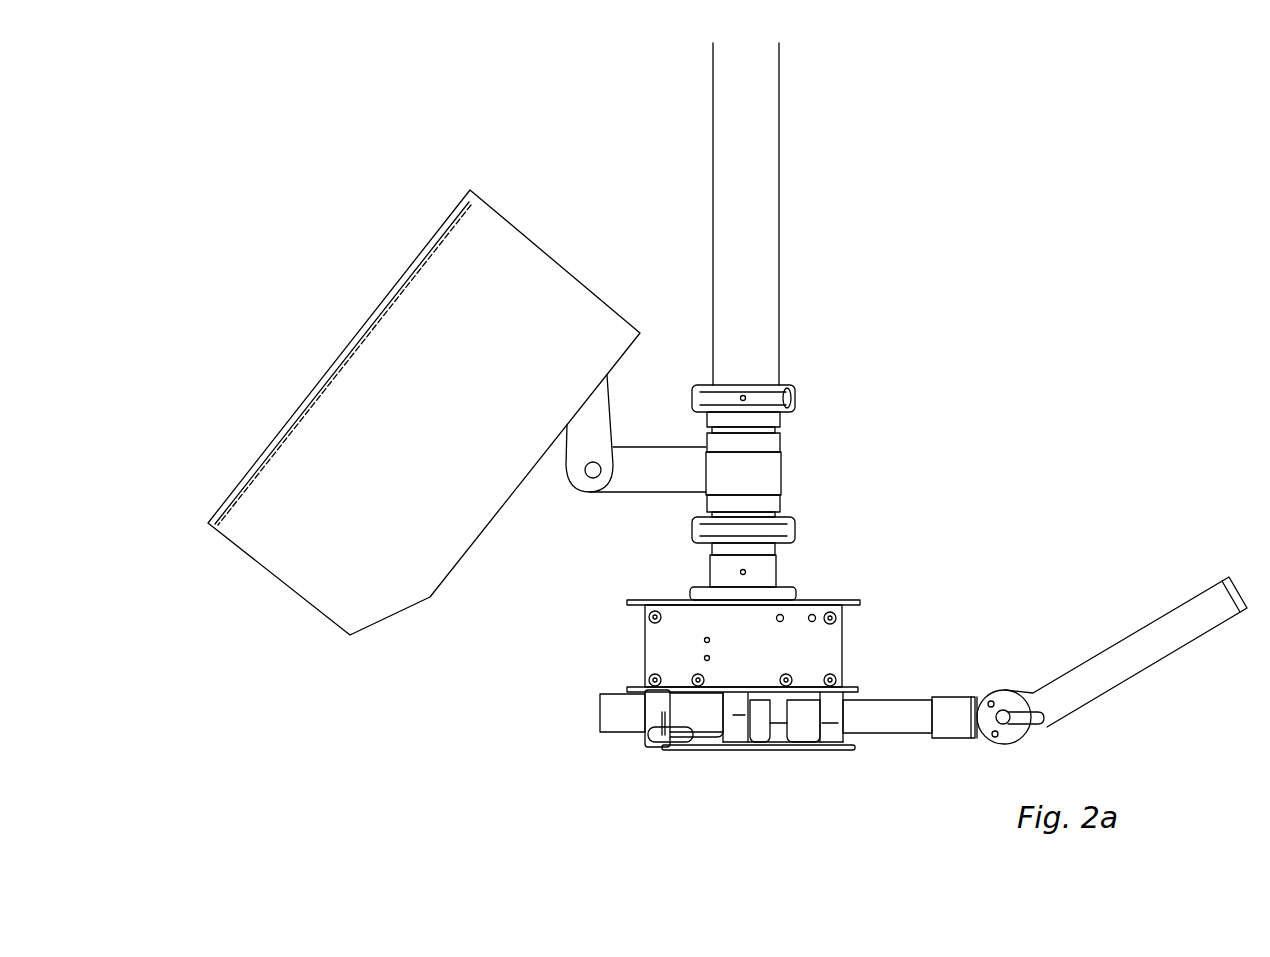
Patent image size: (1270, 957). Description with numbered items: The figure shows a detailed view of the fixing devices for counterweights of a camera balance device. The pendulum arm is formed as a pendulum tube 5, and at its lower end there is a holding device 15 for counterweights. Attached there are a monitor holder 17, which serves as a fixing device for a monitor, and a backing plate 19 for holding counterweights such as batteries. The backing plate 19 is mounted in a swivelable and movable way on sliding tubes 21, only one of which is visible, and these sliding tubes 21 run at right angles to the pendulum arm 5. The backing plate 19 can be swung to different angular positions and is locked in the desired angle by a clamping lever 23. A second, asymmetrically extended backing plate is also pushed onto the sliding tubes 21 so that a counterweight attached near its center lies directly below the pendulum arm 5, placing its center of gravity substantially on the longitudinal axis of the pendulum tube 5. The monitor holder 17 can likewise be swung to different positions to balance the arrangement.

The pendulum tube 5 is at (762, 278).
The holding device 15 is at (753, 538).
The monitor holder 17 is at (397, 588).
The backing plate 19 is at (1147, 648).
The sliding tubes 21 is at (890, 723).
The clamping lever 23 is at (1030, 718).